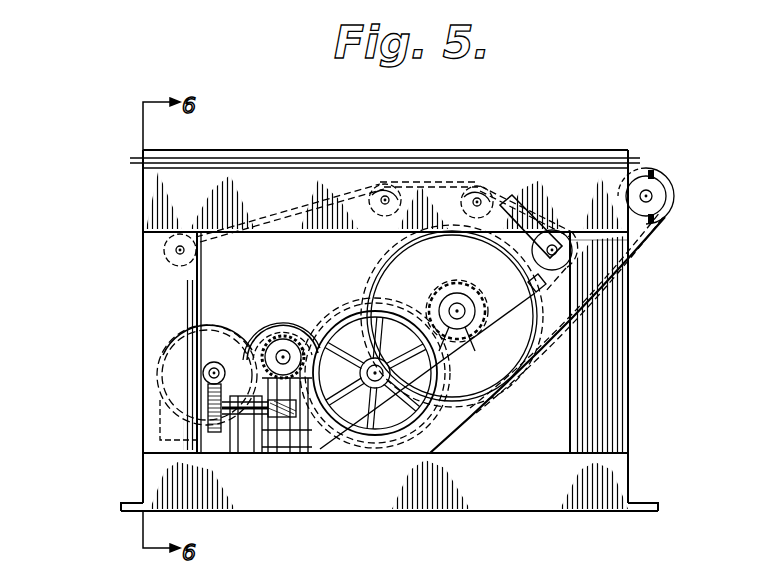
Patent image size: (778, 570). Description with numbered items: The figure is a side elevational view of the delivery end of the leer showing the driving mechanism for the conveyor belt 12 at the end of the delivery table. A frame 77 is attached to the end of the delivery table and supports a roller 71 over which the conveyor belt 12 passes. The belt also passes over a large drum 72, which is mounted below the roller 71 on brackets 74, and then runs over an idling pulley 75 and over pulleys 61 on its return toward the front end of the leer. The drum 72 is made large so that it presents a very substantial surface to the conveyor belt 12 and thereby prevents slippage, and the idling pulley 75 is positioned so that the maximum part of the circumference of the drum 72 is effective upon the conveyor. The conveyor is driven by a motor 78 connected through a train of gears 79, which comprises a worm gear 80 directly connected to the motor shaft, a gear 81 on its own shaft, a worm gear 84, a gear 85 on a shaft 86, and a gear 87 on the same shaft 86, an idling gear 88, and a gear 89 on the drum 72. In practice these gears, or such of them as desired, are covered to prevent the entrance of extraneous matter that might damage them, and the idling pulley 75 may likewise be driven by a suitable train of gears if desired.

The web / sheet material 12 is at (252, 228).
The pulleys 61 is at (178, 236).
The roller 71 is at (660, 180).
The drum 72 is at (398, 264).
The brackets 74 is at (470, 296).
The idling pulley 75 is at (548, 232).
The frame 77 is at (160, 275).
The motor 78 is at (218, 337).
The train of gears 79 is at (253, 430).
The worm gear 80 is at (210, 373).
The gear 81 is at (212, 402).
The worm gear 84 is at (287, 455).
The gear 85 is at (278, 326).
The shaft 86 is at (286, 350).
The gear 87 is at (303, 345).
The idling gear 88 is at (330, 440).
The gear 89 is at (452, 340).